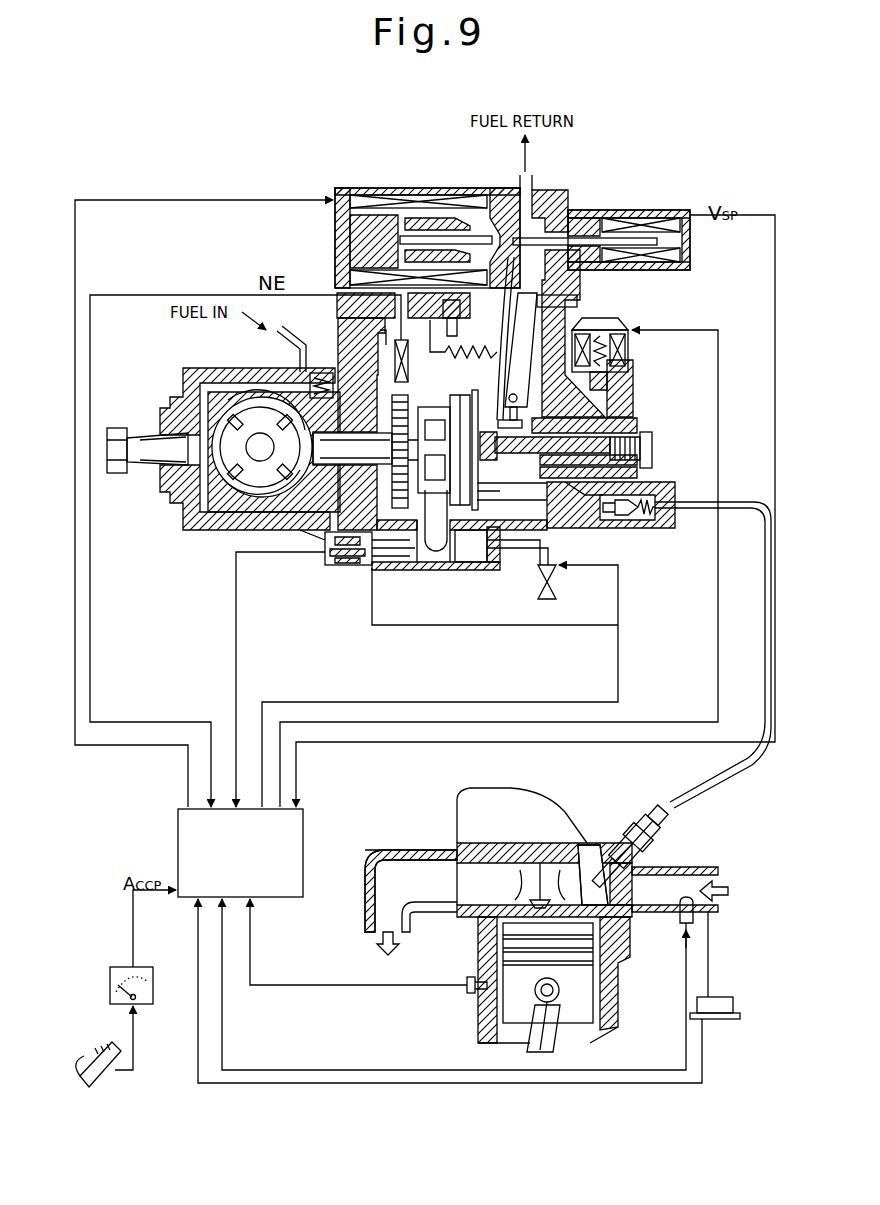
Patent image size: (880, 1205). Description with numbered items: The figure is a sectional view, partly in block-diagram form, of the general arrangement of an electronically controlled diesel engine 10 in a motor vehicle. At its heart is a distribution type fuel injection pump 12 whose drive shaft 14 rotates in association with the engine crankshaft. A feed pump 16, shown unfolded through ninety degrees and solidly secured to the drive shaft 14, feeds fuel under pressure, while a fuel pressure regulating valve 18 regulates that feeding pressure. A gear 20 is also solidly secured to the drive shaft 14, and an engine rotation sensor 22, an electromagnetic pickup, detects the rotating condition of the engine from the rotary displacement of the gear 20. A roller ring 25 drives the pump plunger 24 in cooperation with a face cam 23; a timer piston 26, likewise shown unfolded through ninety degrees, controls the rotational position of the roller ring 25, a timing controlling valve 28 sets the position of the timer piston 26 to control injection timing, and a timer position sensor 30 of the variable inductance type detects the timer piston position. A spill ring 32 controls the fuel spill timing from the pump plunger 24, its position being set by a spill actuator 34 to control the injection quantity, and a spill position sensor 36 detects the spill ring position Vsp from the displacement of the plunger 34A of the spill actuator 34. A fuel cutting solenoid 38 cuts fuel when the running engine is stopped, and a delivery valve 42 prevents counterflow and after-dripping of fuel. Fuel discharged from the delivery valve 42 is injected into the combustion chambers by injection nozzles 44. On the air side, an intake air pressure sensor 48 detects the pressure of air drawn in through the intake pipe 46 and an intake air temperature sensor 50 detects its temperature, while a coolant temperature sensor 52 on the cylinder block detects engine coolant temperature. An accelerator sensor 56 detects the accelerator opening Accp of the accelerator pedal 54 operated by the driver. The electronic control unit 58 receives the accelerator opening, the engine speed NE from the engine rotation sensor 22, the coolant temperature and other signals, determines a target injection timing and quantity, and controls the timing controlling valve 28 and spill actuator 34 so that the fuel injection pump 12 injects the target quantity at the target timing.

The diesel engine 10 is at (580, 777).
The distribution type fuel injection pump 12 is at (624, 195).
The drive shaft 14 is at (141, 438).
The feed pump 16 is at (236, 495).
The fuel pressure regulating valve 18 is at (324, 375).
The gear 20 is at (410, 410).
The engine rotation sensor 22 is at (405, 362).
The face cam 23 is at (452, 495).
The pump plunger 24 is at (616, 437).
The roller ring 25 is at (435, 497).
The timer piston 26 is at (472, 552).
The timing controlling valve 28 is at (558, 582).
The timer position sensor 30 is at (344, 565).
The spill ring 32 is at (502, 403).
The spill actuator 34 is at (453, 185).
The plunger of the spill actuator 34A is at (500, 205).
The spill position sensor 36 is at (657, 212).
The fuel cutting solenoid 38 is at (630, 352).
The delivery valve 42 is at (638, 528).
The injection nozzle 44 is at (652, 832).
The intake pipe 46 is at (689, 867).
The intake air pressure sensor 48 is at (722, 996).
The intake air temperature sensor 50 is at (679, 920).
The coolant temperature sensor 52 is at (467, 972).
The accelerator pedal 54 is at (97, 1082).
The accelerator sensor 56 is at (148, 998).
The electronic control unit 58 is at (305, 838).